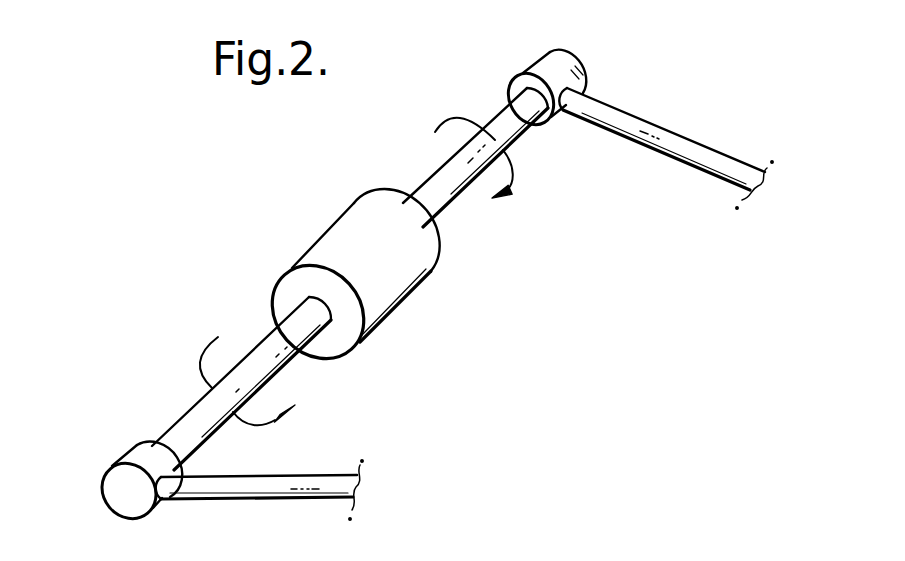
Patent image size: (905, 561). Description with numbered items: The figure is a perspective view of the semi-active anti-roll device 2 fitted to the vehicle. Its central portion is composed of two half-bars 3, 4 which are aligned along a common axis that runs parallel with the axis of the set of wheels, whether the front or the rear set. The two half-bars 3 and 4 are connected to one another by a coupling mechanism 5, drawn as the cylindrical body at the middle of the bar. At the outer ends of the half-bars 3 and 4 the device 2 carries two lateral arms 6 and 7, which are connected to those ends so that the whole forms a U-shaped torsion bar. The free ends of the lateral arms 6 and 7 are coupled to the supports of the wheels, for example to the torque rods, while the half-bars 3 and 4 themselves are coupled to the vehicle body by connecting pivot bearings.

The semi-active anti-roll device 2 is at (228, 243).
The half-bar 3 is at (250, 358).
The half-bar 4 is at (422, 198).
The coupling mechanism 5 is at (338, 240).
The lateral arm 6 is at (260, 485).
The lateral arm 7 is at (660, 130).